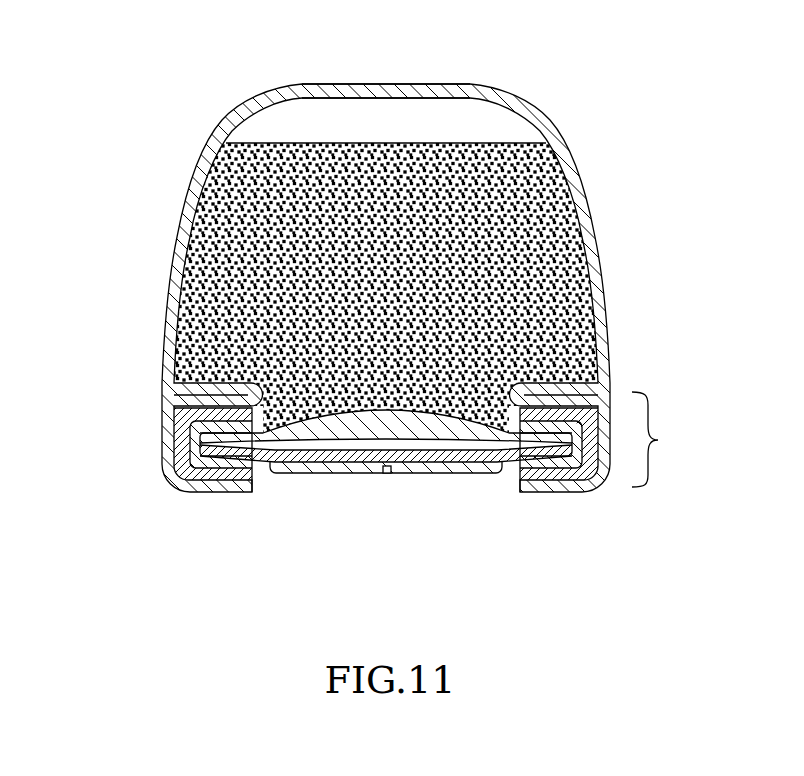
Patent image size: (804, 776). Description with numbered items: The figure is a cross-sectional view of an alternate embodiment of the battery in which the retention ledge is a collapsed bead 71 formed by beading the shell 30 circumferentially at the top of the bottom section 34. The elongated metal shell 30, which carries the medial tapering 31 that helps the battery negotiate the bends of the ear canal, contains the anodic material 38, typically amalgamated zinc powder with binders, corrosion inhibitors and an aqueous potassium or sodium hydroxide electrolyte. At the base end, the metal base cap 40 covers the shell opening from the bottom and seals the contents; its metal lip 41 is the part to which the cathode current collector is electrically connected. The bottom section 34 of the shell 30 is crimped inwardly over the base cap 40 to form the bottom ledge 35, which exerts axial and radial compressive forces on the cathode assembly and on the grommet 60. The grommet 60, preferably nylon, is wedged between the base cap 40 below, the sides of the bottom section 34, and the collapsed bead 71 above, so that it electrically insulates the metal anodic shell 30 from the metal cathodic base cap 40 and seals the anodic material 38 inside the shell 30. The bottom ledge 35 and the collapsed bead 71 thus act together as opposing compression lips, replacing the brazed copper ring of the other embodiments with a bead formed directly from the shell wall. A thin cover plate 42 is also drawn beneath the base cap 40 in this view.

The shell 30 is at (605, 298).
The medial tapering 31 is at (450, 83).
The anodic material 38 is at (217, 225).
The collapsed bead 71 is at (570, 381).
The bottom ledge 35 is at (203, 492).
The grommet 60 is at (200, 424).
The metal base cap 40 is at (425, 472).
The metal lip 41 is at (188, 427).
The bottom cover plate 42 is at (387, 473).
The bottom section 34 is at (661, 439).